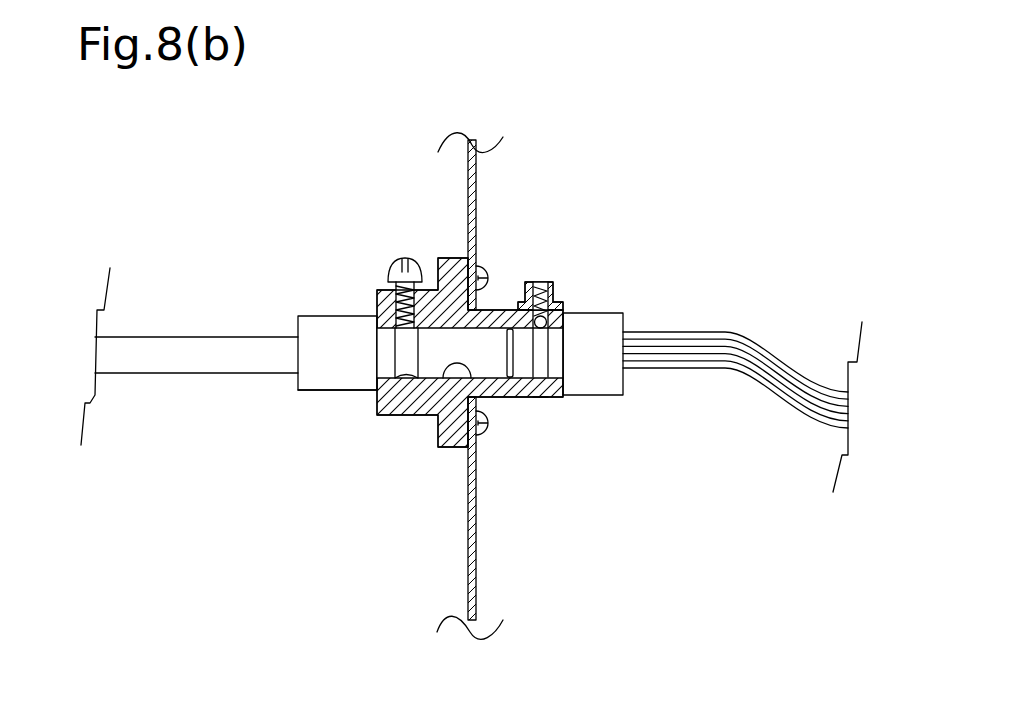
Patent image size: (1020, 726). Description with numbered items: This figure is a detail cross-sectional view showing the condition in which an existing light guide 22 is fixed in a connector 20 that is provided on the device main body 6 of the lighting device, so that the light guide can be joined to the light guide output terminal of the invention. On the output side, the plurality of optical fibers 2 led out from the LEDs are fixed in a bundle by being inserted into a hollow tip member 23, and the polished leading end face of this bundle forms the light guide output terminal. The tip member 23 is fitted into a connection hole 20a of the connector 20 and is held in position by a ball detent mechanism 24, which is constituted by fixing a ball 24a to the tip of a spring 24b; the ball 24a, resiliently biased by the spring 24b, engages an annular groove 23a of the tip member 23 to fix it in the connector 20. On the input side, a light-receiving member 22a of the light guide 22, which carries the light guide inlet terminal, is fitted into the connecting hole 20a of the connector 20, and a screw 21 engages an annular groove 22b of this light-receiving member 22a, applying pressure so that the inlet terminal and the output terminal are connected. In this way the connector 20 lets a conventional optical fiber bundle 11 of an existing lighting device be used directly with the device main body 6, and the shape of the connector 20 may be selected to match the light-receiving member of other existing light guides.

The optical fibers 2 is at (762, 377).
The device main body 6 is at (458, 589).
The optical fiber bundle 11 is at (168, 363).
The connector 20 is at (392, 417).
The connection hole 20a is at (443, 378).
The screw 21 is at (412, 262).
The light guide 22 is at (297, 310).
The light-receiving member 22a is at (318, 385).
The annular groove 22b is at (403, 355).
The tip member 23 is at (605, 320).
The annular groove 23a is at (542, 400).
The ball detent mechanism 24 is at (576, 306).
The ball 24a is at (541, 332).
The spring 24b is at (537, 290).